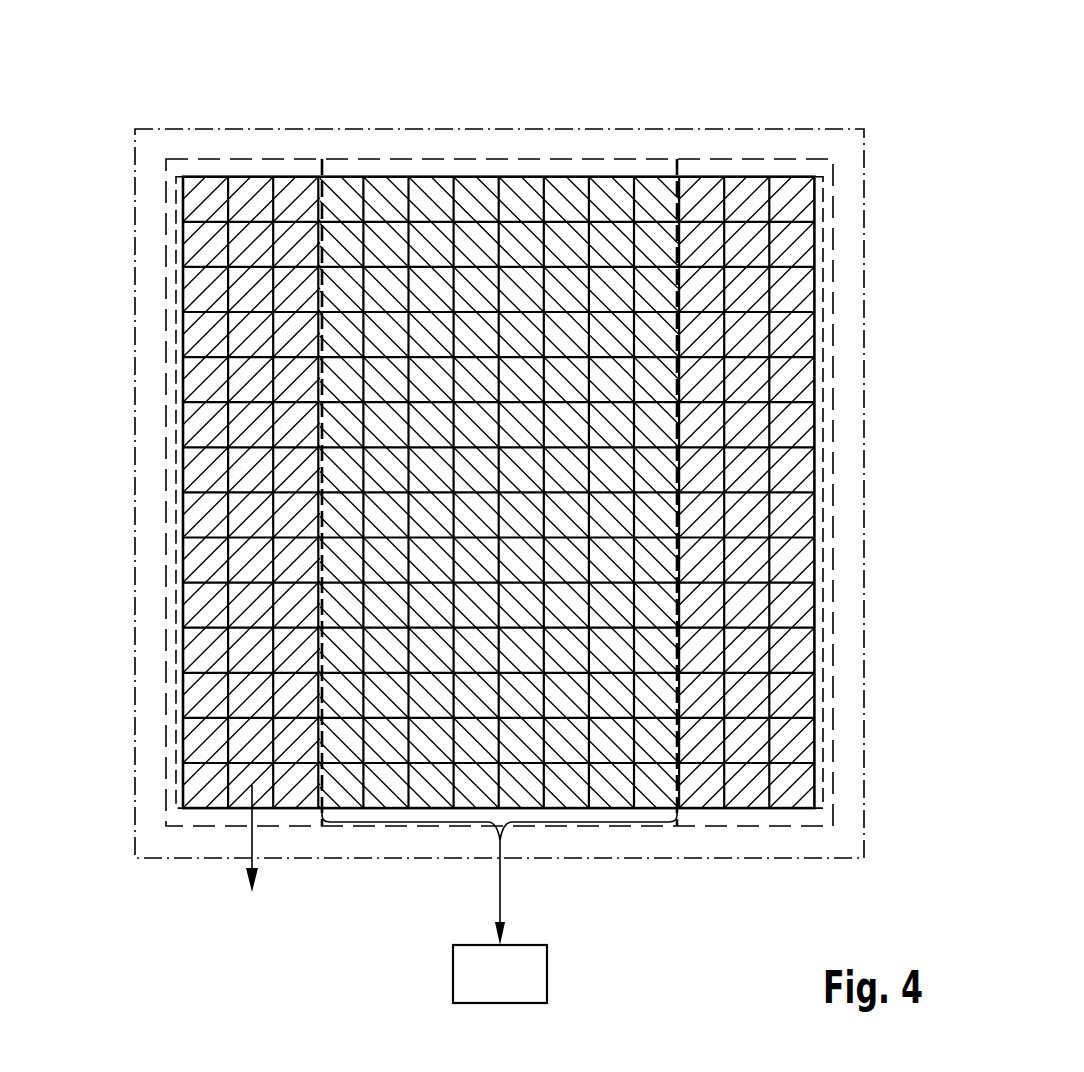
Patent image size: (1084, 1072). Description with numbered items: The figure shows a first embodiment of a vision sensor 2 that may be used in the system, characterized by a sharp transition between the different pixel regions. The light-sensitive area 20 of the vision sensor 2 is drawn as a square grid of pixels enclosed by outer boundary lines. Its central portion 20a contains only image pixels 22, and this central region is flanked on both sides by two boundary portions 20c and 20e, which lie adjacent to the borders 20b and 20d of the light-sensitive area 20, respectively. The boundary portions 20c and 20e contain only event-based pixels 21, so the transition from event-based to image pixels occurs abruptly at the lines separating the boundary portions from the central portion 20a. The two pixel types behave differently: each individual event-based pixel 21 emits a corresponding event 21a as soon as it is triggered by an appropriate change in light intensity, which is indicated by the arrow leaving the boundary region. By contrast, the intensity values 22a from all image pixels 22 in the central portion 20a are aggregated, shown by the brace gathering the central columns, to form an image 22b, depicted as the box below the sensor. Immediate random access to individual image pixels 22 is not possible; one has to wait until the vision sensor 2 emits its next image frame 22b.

The vision sensor 2 is at (896, 124).
The light-sensitive area 20 is at (865, 783).
The central portion 20a is at (523, 158).
The border 20b is at (172, 417).
The boundary portion 20c is at (255, 158).
The border 20d is at (823, 422).
The boundary portion 20e is at (762, 157).
The event-based pixel 21 is at (250, 777).
The event 21a is at (250, 845).
The image pixel 22 is at (518, 809).
The intensity value 22a is at (499, 891).
The image 22b is at (467, 980).